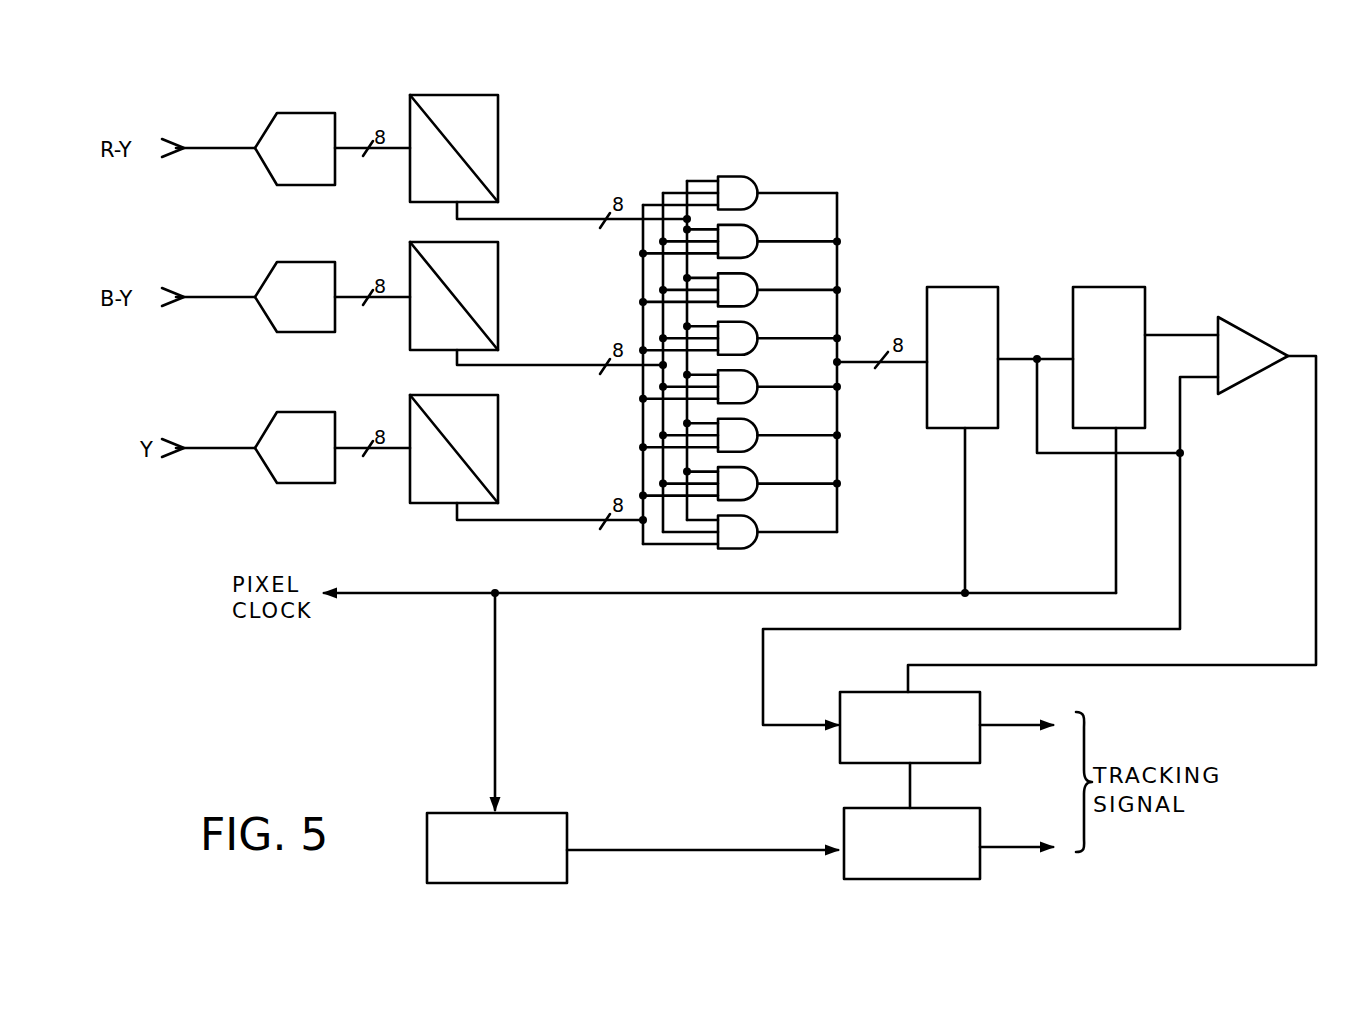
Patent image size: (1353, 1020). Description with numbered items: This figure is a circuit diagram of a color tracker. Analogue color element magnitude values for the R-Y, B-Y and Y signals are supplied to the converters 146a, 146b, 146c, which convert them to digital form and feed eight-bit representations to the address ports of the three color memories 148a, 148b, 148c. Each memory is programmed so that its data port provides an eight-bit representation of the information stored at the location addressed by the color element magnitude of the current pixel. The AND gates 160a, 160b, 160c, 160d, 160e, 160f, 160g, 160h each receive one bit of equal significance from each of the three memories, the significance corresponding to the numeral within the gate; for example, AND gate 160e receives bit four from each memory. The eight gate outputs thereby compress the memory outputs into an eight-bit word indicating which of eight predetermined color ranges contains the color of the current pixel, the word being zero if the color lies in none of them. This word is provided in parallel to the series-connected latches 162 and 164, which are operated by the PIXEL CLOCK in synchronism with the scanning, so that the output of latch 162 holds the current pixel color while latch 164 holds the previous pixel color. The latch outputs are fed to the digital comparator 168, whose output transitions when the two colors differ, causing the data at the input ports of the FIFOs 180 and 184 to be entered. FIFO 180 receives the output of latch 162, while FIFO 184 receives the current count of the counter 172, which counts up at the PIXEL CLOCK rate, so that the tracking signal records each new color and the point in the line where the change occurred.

The converter 146a is at (312, 113).
The converter 146b is at (312, 262).
The converter 146c is at (312, 412).
The color memory 148a is at (500, 105).
The color memory 148b is at (500, 252).
The color memory 148c is at (500, 405).
The AND gate 160a is at (748, 177).
The AND gate 160b is at (748, 225).
The AND gate 160c is at (748, 274).
The AND gate 160d is at (748, 322).
The AND gate 160e is at (748, 371).
The AND gate 160f is at (748, 419).
The AND gate 160g is at (748, 468).
The AND gate 160h is at (748, 516).
The latch 162 is at (977, 287).
The latch 164 is at (1122, 287).
The digital comparator 168 is at (1252, 332).
The digital counter 172 is at (568, 813).
The FIFO 180 is at (866, 692).
The FIFO 184 is at (856, 808).